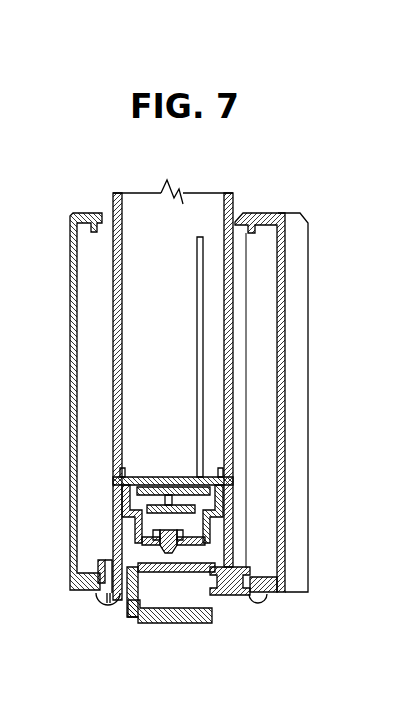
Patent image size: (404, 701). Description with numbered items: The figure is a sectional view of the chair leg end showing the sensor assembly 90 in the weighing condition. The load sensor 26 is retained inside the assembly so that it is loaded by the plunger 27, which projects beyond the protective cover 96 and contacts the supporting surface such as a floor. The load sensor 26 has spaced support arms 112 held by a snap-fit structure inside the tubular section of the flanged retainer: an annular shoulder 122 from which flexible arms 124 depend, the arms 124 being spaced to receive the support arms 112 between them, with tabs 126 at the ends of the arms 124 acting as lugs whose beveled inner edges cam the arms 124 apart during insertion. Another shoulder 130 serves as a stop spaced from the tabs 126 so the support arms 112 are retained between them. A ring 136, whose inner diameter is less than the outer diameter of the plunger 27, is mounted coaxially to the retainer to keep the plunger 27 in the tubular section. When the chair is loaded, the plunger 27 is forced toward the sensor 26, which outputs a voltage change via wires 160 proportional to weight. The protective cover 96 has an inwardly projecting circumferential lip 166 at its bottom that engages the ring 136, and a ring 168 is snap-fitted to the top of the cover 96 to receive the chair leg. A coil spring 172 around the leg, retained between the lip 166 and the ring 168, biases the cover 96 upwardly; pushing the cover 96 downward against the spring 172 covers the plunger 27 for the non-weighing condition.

The sensor assembly 90 is at (318, 288).
The protective cover 96 is at (308, 384).
The ring 168 is at (266, 214).
The coil spring 172 is at (236, 265).
The wires 160 is at (198, 358).
The annular shoulder 122 is at (132, 478).
The flexible arms 124 is at (161, 481).
The tabs 126 is at (211, 523).
The shoulder 130 is at (223, 510).
The load sensor 26 is at (190, 553).
The ring 136 is at (96, 586).
The circumferential lip 166 is at (77, 594).
The support arms 112 is at (136, 575).
The plunger 27 is at (181, 624).